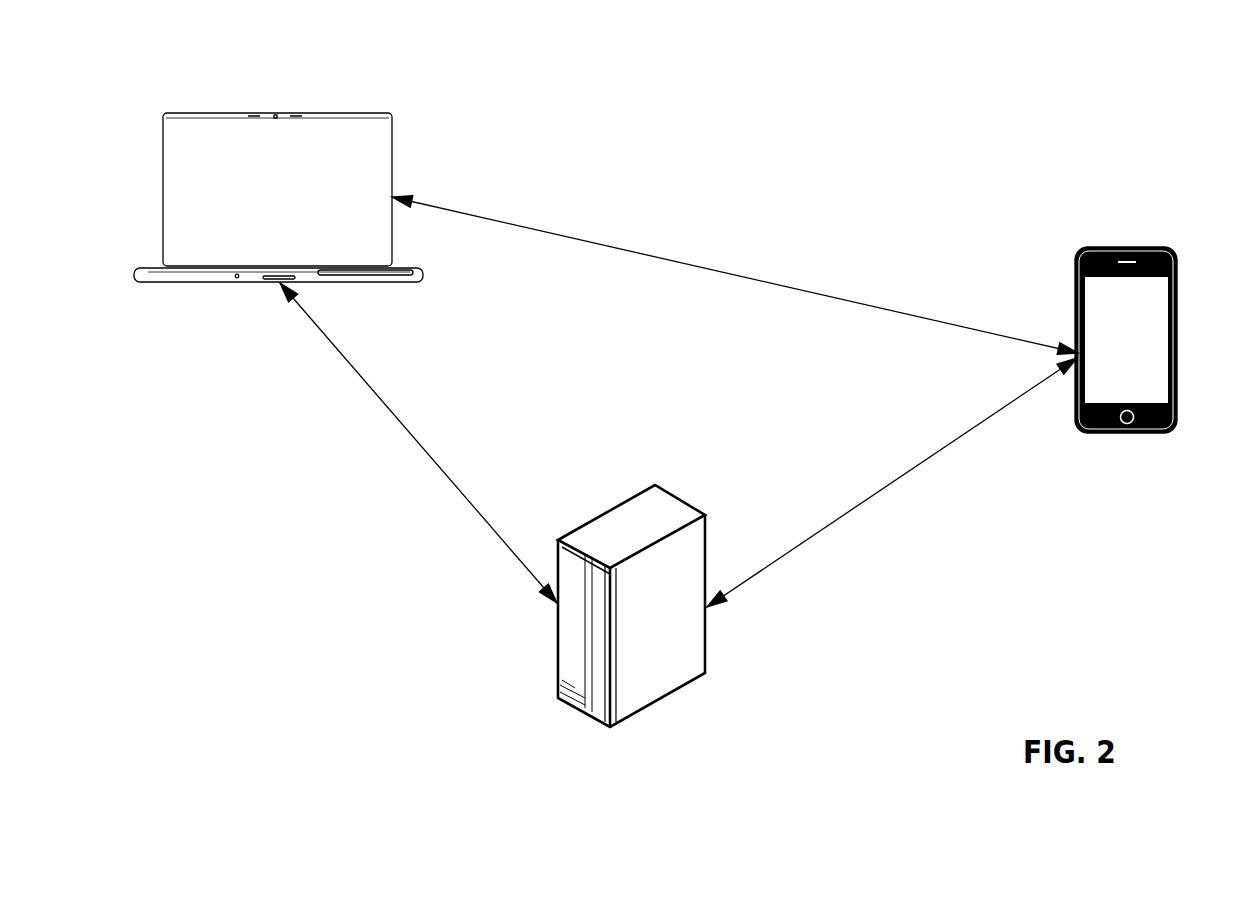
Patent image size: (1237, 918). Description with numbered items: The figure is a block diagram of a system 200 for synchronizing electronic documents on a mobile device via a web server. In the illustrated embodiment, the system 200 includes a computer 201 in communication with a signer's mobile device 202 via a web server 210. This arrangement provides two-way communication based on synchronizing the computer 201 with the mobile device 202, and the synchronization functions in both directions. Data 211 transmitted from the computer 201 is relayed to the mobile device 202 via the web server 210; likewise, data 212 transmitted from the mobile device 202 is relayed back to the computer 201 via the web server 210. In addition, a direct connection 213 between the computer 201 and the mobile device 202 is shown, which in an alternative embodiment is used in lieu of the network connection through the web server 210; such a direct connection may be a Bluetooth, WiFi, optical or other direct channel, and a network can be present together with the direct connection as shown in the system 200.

The system 200 is at (1092, 97).
The computer 201 is at (347, 107).
The mobile device 202 is at (1217, 491).
The web server 210 is at (693, 776).
The data 211 is at (418, 443).
The data 212 is at (892, 482).
The direct connection 213 is at (735, 275).